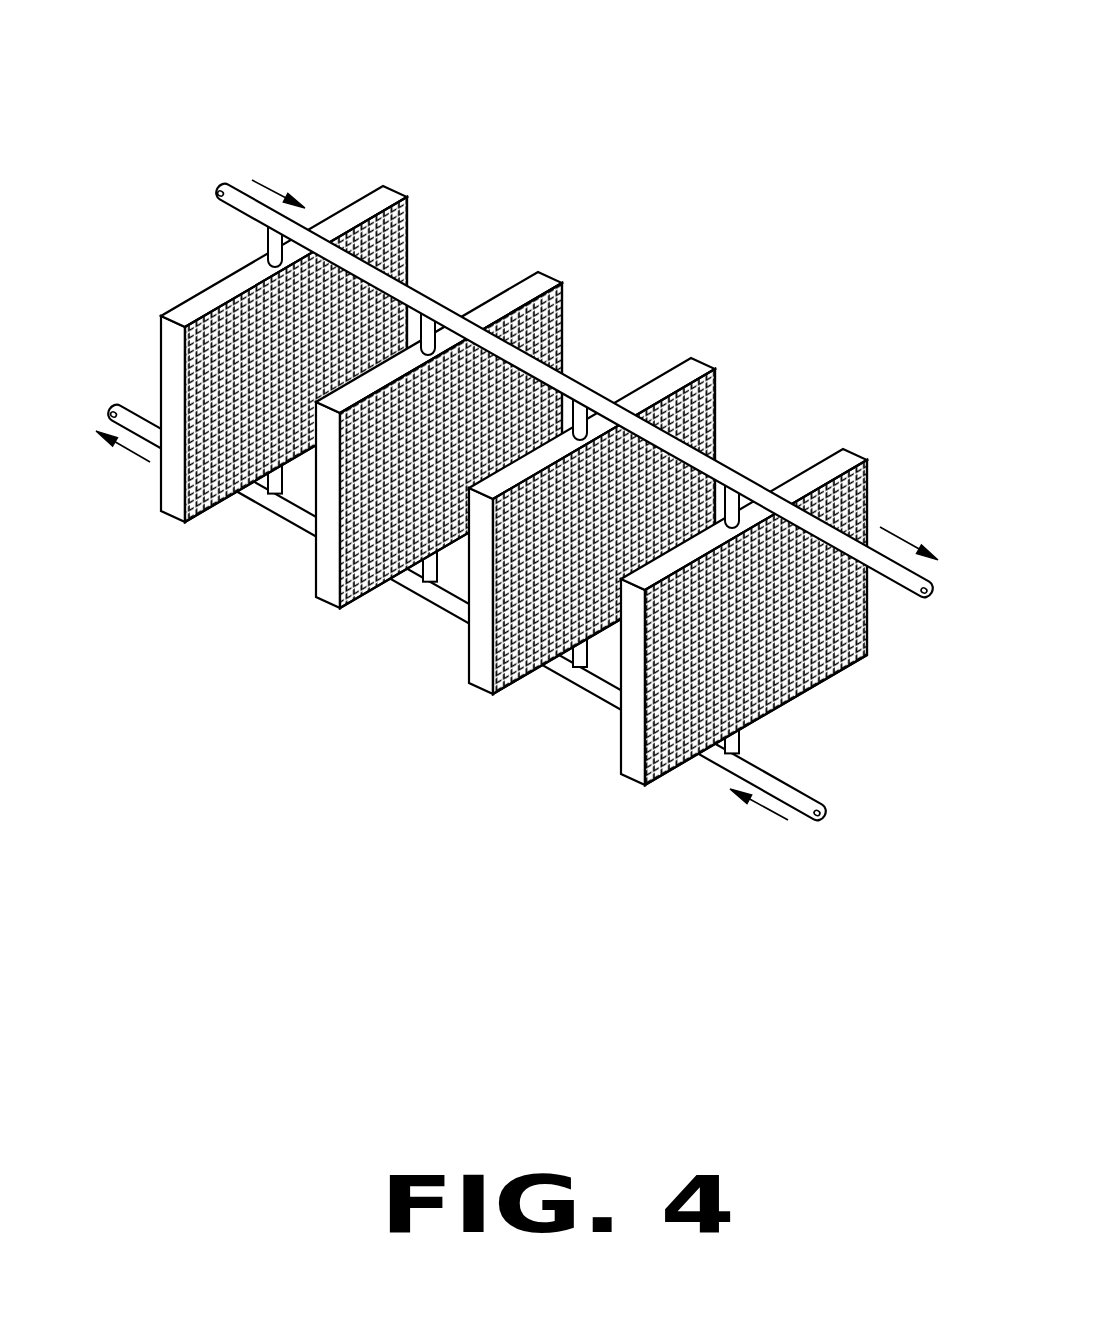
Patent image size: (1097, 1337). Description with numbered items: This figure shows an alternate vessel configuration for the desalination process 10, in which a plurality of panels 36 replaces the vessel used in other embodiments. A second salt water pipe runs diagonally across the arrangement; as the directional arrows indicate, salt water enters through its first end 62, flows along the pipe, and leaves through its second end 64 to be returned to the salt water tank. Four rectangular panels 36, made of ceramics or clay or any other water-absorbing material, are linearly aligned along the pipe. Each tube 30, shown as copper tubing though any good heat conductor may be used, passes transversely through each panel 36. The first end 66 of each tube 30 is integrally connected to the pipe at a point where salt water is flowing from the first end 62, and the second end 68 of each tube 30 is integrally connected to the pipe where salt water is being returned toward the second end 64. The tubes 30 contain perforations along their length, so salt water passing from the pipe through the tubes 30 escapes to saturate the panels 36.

The desalination process 10 is at (491, 422).
The tube 30 is at (491, 422).
The panels 36 is at (565, 300).
The first end of the second salt water pipe 62 is at (238, 182).
The second end of the second salt water pipe 64 is at (135, 410).
The first end of each tube 66 is at (266, 238).
The second end of each tube 68 is at (271, 478).